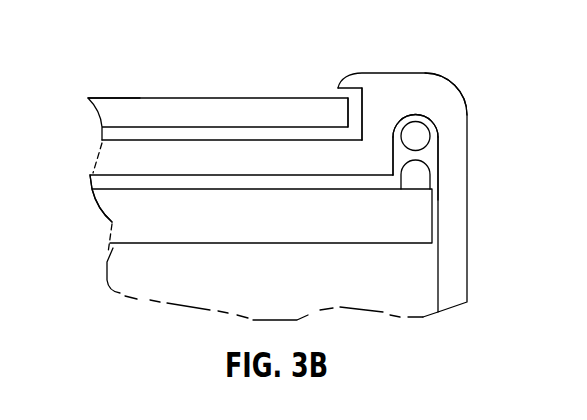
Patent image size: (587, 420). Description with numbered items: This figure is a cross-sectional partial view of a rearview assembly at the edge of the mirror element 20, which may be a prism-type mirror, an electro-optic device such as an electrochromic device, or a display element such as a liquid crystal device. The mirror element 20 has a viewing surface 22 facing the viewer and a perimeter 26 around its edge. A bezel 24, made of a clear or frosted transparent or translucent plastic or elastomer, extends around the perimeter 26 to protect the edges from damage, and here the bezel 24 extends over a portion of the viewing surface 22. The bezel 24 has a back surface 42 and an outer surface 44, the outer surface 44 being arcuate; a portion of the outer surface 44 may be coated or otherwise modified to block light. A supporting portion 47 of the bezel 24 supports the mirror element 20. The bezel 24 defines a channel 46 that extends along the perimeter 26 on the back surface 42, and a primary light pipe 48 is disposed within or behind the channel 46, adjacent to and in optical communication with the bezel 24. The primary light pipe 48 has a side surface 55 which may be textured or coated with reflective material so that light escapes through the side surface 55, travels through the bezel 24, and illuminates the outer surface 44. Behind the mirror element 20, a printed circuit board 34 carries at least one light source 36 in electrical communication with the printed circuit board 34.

The mirror element 20 is at (208, 110).
The viewing surface 22 is at (138, 98).
The bezel 24 is at (430, 88).
The perimeter 26 is at (361, 101).
The printed circuit board 34 is at (417, 213).
The light source 36 is at (417, 171).
The back surface 42 is at (137, 178).
The outer surface 44 is at (425, 73).
The channel 46 is at (430, 148).
The supporting portion 47 is at (120, 160).
The primary light pipe 48 is at (415, 132).
The side surface 55 is at (405, 125).